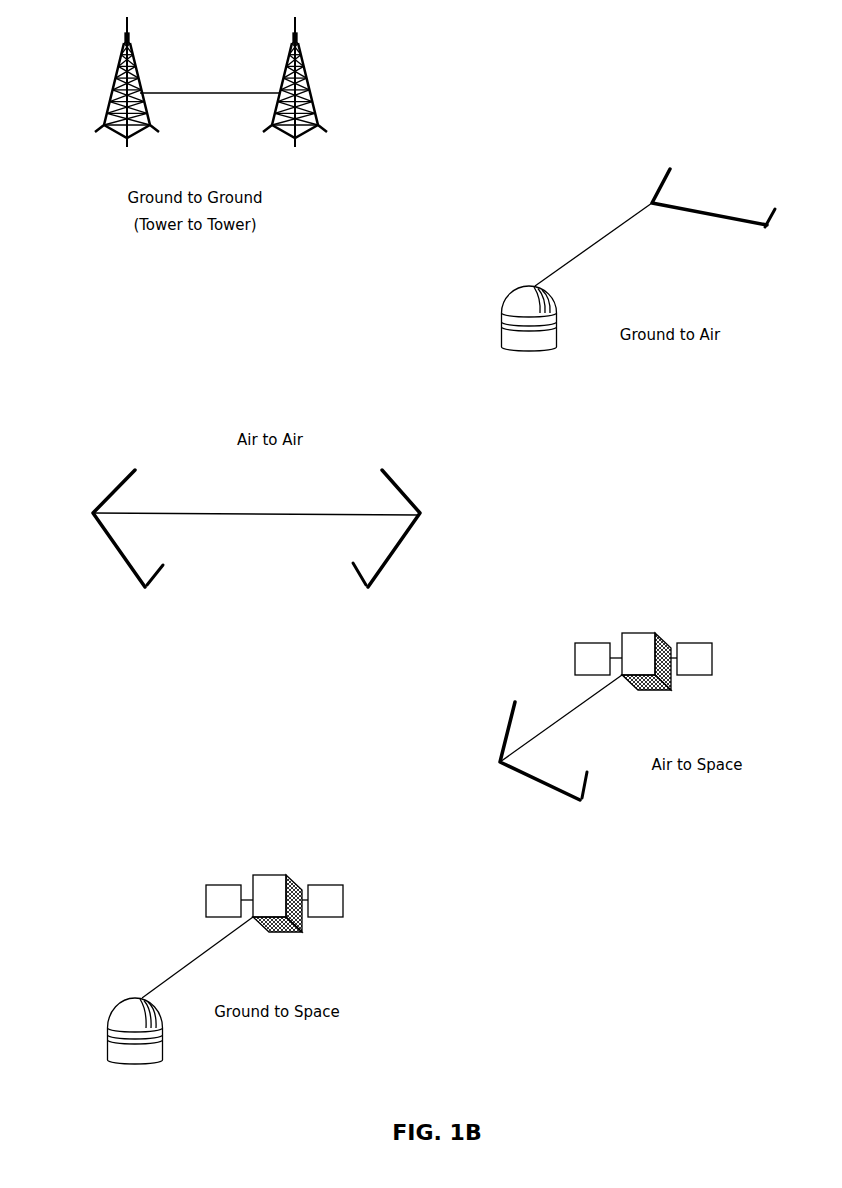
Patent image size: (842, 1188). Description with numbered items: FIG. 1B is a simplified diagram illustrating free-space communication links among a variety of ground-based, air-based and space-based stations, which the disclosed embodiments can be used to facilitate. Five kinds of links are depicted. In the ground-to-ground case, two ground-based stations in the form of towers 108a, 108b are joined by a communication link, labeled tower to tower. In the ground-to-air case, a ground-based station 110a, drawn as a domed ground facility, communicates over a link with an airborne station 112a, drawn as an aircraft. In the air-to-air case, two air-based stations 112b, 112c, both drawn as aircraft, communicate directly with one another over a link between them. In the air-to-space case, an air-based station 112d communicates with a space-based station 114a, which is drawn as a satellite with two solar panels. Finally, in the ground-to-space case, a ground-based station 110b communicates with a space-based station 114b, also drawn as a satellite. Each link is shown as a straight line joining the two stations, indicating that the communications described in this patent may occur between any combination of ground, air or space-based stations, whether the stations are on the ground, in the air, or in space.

The tower 108a is at (108, 91).
The tower 108b is at (283, 92).
The ground-based station 110a is at (515, 334).
The ground-based station 110b is at (121, 1047).
The airborne station 112a is at (713, 210).
The air-based station 112b is at (118, 534).
The air-based station 112c is at (390, 534).
The air-based station 112d is at (543, 761).
The space-based station 114a is at (643, 649).
The space-based station 114b is at (274, 891).